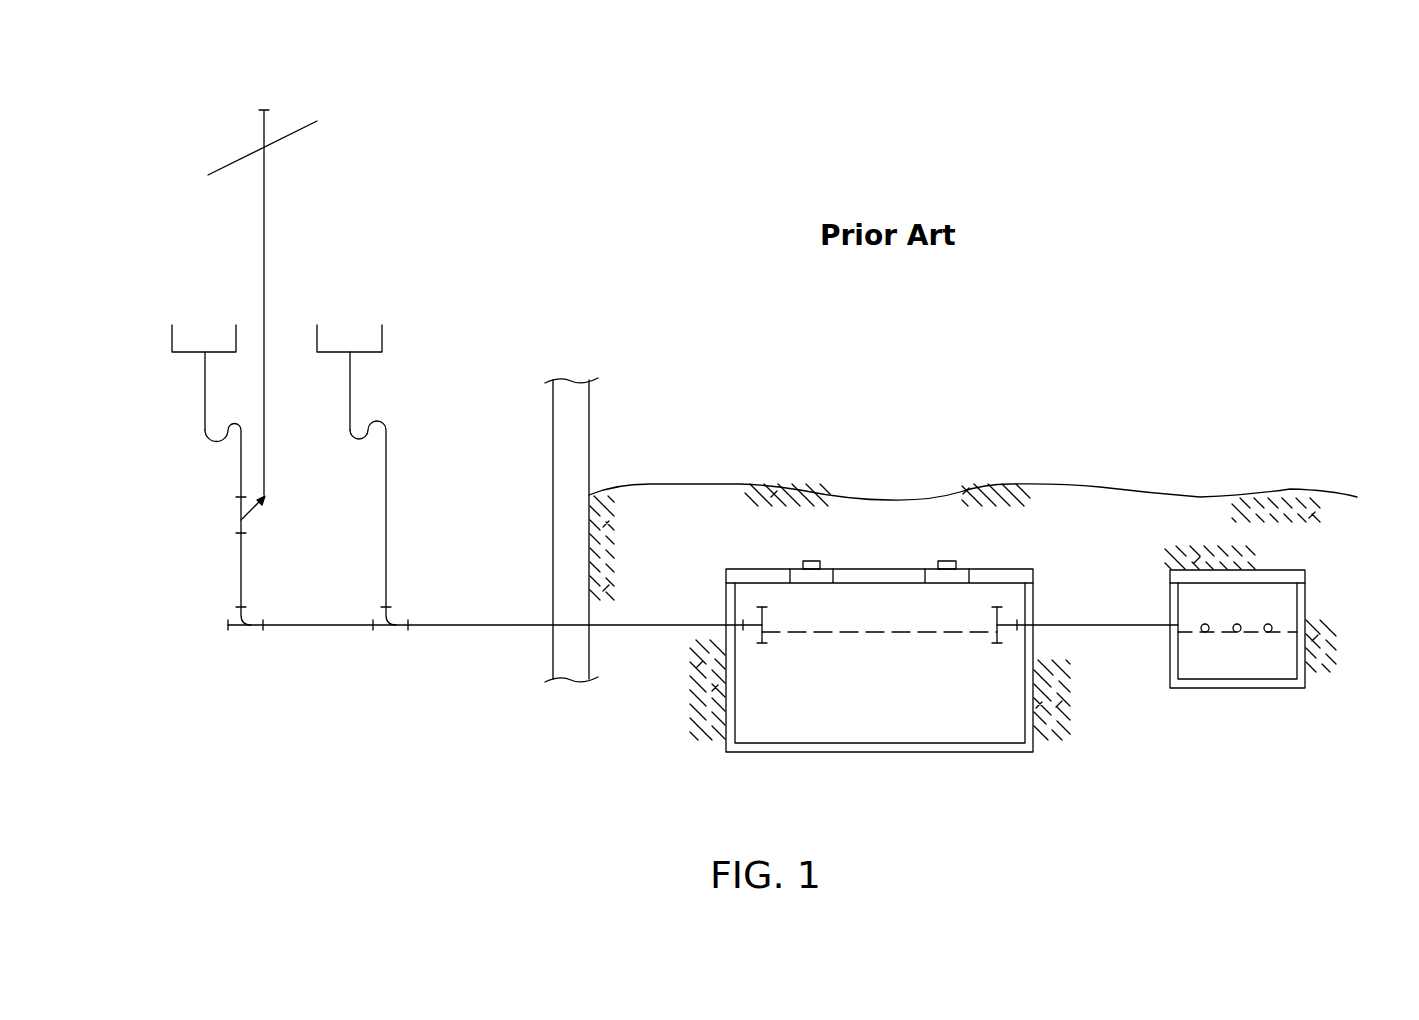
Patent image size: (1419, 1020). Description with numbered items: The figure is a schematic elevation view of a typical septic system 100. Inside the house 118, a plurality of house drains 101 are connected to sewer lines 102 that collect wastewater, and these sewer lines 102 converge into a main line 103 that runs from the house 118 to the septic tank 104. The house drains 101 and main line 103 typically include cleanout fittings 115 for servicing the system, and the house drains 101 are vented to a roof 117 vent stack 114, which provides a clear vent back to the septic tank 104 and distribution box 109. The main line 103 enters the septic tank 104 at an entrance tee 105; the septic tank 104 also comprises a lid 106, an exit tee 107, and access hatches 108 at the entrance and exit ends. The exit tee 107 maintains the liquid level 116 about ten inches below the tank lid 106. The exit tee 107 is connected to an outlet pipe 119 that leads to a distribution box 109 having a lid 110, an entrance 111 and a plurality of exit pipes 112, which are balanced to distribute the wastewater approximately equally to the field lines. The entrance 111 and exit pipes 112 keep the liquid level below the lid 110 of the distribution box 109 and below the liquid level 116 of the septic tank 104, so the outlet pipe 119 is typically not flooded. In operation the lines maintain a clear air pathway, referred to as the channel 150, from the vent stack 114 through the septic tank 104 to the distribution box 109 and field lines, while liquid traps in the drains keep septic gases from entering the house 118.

The septic system 100 is at (510, 240).
The house drains 101 is at (205, 388).
The sewer lines 102 is at (386, 503).
The main line 103 is at (515, 624).
The septic tank 104 is at (915, 752).
The entrance tee 105 is at (766, 612).
The lid 106 is at (880, 569).
The exit tee 107 is at (997, 620).
The access hatches 108 is at (788, 561).
The distribution box 109 is at (1228, 688).
The lid 110 is at (1258, 569).
The entrance 111 is at (1180, 628).
The exit pipes 112 is at (1268, 626).
The vent stack 114 is at (264, 274).
The cleanout fittings 115 is at (228, 625).
The liquid level 116 is at (877, 633).
The roof 117 is at (300, 130).
The house 118 is at (589, 437).
The outlet pipe 119 is at (1117, 628).
The channel 150 is at (264, 112).